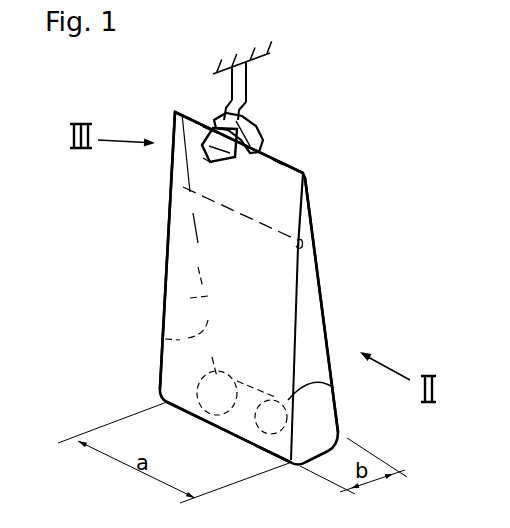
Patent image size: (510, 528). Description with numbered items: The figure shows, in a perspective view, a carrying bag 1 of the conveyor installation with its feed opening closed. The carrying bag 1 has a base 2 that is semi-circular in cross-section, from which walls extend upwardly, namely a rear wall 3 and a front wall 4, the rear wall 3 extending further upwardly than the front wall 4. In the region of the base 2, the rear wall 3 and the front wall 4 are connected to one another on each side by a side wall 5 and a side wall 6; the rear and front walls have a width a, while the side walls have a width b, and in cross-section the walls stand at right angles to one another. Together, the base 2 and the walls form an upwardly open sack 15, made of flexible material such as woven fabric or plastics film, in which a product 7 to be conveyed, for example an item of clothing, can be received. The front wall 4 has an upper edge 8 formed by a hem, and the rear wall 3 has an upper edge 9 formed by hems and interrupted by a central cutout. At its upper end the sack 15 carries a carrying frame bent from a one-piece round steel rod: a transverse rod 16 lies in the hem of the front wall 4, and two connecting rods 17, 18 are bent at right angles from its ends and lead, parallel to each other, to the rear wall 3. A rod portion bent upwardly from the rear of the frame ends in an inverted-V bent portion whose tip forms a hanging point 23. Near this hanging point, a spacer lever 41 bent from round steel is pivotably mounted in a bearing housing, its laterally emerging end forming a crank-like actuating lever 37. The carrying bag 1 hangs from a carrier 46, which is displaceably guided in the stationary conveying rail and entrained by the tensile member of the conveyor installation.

The carrying bag 1 is at (334, 322).
The base 2 is at (236, 432).
The rear wall 3 is at (288, 215).
The front wall 4 is at (190, 300).
The side wall 5 is at (320, 408).
The side wall 6 is at (173, 361).
The product to be conveyed 7 is at (233, 377).
The upper edge 8 is at (238, 205).
The upper edge 9 is at (302, 160).
The sack 15 is at (249, 316).
The transverse rod 16 is at (193, 228).
The connecting rod 17 is at (183, 148).
The connecting rod 18 is at (300, 238).
The hanging point 23 is at (243, 98).
The actuating lever 37 is at (211, 116).
The spacer lever 41 is at (200, 167).
The carrier 46 is at (246, 72).